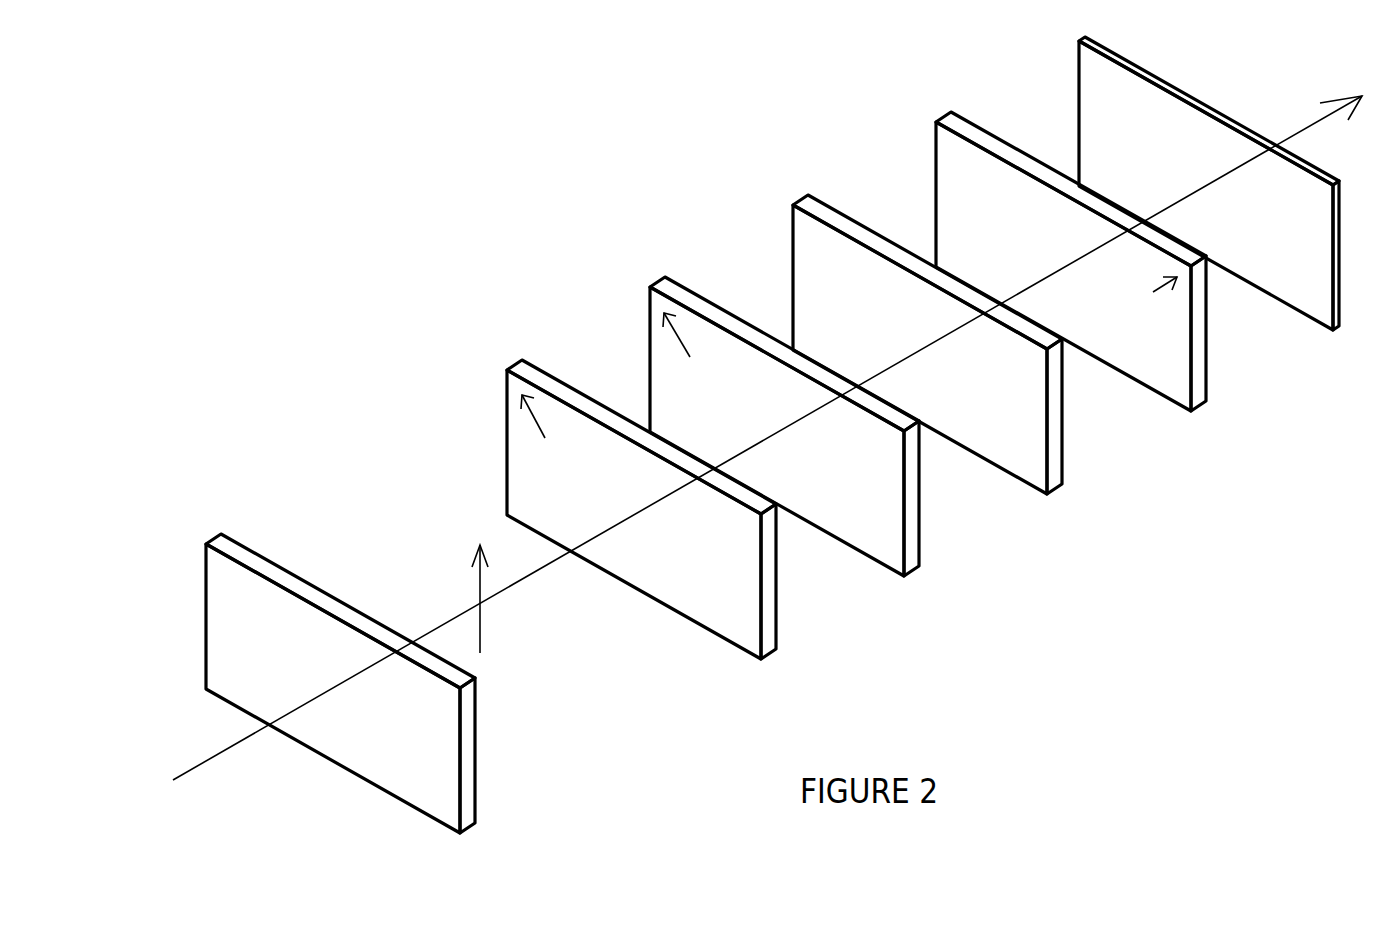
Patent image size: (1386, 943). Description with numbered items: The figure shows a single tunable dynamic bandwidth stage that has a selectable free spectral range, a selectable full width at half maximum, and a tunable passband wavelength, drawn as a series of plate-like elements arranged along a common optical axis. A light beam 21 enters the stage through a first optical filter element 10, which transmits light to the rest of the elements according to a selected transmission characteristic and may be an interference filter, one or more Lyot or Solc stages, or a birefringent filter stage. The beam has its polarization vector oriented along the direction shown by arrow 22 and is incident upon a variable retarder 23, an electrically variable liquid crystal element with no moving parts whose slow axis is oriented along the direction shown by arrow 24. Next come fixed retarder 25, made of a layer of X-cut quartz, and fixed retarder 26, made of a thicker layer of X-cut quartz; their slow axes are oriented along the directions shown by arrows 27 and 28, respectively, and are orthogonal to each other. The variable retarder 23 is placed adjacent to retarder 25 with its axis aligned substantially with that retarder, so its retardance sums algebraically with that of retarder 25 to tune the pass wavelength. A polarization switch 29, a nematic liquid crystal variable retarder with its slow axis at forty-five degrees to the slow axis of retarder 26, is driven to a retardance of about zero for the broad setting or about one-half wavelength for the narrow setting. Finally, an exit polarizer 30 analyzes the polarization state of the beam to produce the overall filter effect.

The first optical filter element 10 is at (468, 838).
The light beam 21 is at (230, 757).
The arrow 22 is at (490, 637).
The variable retarder 23 is at (772, 663).
The arrow 24 is at (538, 425).
The fixed retarder 25 is at (917, 580).
The fixed retarder 26 is at (1203, 415).
The arrow 27 is at (684, 343).
The arrow 28 is at (1166, 287).
The polarization switch 29 is at (1053, 497).
The exit polarizer 30 is at (1333, 333).